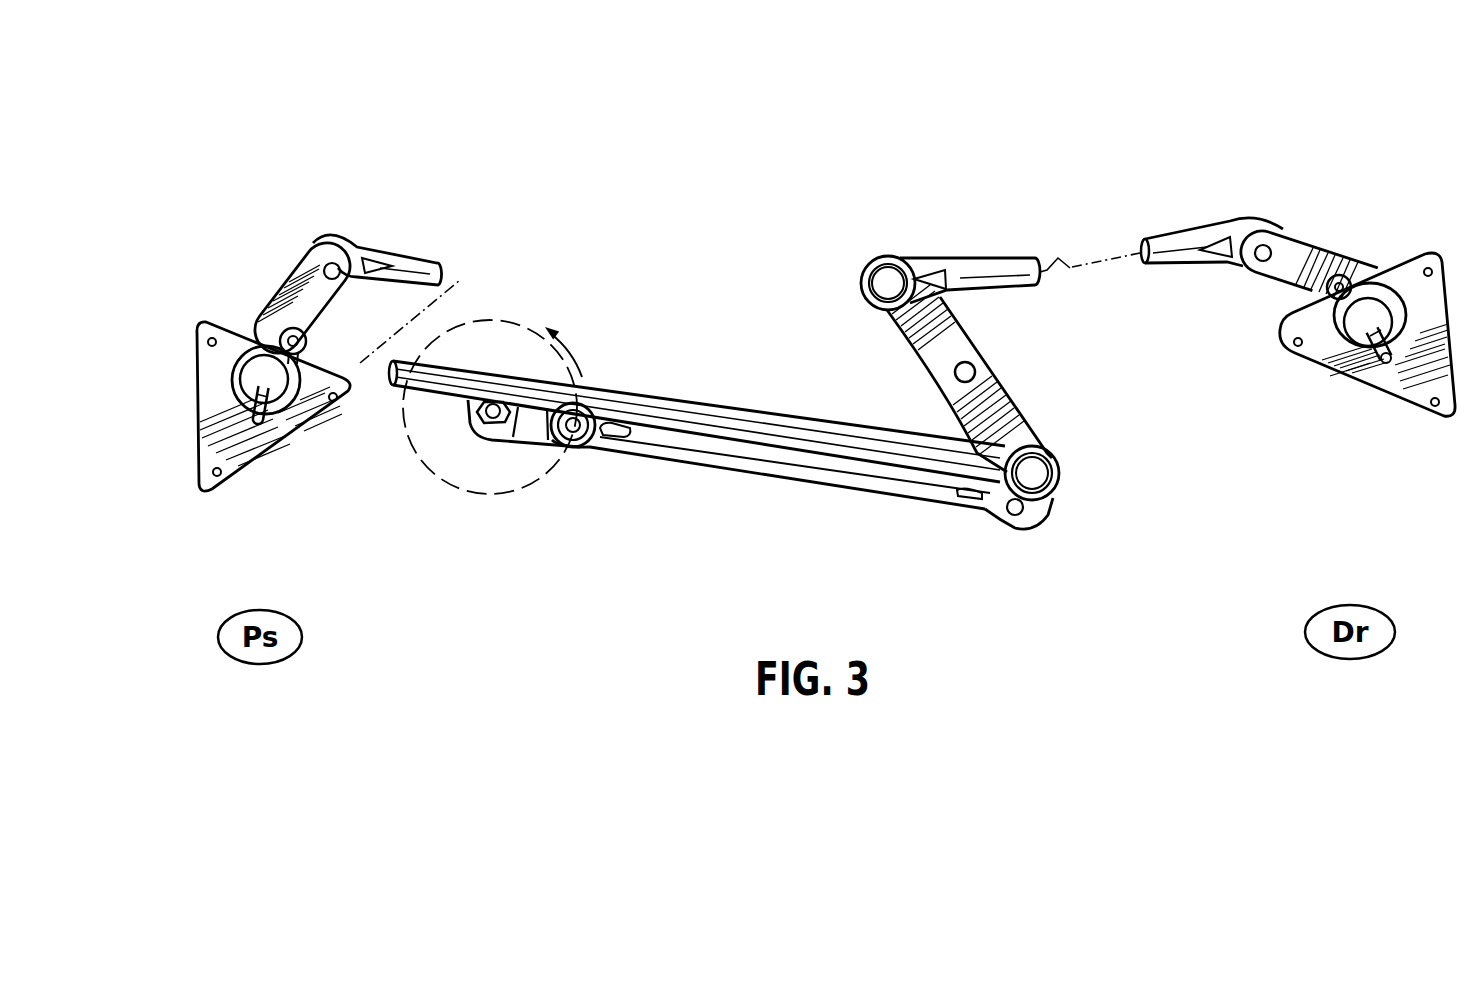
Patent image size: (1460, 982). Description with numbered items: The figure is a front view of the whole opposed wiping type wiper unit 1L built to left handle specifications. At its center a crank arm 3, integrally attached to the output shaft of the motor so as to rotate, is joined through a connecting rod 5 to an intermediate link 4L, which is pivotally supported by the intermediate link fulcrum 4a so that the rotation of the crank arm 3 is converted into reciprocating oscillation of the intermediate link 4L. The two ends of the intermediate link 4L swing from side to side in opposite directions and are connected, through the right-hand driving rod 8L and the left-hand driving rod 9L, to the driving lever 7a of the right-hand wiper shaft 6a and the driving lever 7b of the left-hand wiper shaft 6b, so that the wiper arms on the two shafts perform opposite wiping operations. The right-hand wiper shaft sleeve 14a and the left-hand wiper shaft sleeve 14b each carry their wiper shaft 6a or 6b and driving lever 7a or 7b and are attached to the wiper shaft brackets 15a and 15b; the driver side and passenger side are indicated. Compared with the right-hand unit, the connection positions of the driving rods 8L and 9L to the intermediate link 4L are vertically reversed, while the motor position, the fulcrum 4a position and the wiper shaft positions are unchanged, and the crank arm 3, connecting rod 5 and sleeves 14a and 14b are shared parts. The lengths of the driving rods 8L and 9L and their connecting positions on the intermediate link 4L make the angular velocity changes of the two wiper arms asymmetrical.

The opposed wiping type wiper unit 1L is at (1049, 150).
The crank arm 3 is at (522, 447).
The intermediate link 4L is at (923, 331).
The intermediate link fulcrum 4a is at (975, 373).
The connecting rod 5 is at (780, 477).
The right-hand wiper shaft 6a is at (258, 422).
The left-hand wiper shaft 6b is at (1386, 360).
The driving lever 7a is at (307, 272).
The driving lever 7b is at (1296, 259).
The right-hand driving rod 8L is at (677, 413).
The left-hand driving rod 9L is at (978, 270).
The right-hand wiper shaft sleeve 14a is at (226, 266).
The left-hand wiper shaft sleeve 14b is at (1371, 173).
The wiper shaft bracket 15a is at (302, 430).
The wiper shaft bracket 15b is at (1343, 366).